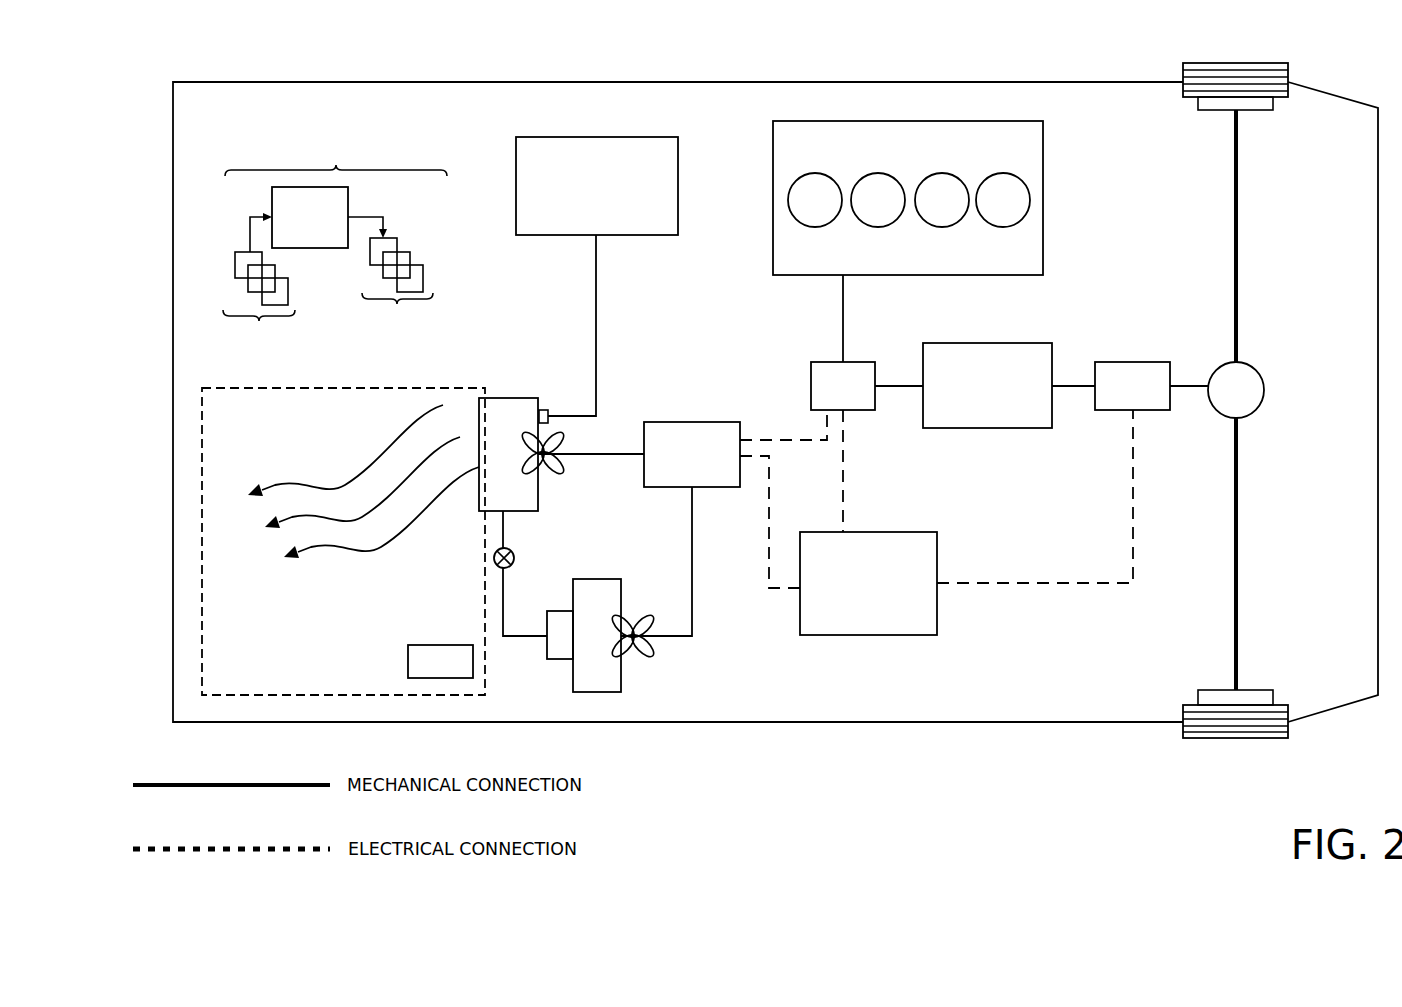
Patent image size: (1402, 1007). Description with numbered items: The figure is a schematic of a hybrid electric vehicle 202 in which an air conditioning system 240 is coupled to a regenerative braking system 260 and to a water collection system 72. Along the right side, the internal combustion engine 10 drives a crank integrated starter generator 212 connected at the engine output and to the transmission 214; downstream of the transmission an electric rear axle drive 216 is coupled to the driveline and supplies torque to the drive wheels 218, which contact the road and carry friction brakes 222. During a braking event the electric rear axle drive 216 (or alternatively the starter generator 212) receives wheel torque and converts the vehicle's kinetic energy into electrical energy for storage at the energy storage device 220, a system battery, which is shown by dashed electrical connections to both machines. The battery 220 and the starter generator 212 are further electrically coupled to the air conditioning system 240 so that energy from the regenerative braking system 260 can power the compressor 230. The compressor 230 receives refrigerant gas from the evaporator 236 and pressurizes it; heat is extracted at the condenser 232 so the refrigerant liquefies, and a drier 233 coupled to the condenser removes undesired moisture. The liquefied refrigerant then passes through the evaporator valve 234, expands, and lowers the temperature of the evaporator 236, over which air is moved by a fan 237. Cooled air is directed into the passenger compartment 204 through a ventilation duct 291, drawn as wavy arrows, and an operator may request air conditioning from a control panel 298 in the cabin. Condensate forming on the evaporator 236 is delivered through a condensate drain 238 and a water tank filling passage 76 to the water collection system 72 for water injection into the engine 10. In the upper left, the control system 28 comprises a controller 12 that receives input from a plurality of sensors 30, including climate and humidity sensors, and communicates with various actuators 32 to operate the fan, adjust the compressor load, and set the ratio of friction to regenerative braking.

The hybrid electric vehicle 202 is at (760, 82).
The control system 28 is at (336, 143).
The controller 12 is at (299, 228).
The sensors 30 is at (263, 289).
The actuators 32 is at (398, 282).
The water collection system 72 is at (585, 195).
The water tank filling passage 76 is at (597, 294).
The internal combustion engine 10 is at (898, 152).
The crank integrated starter generator 212 is at (828, 396).
The transmission 214 is at (973, 396).
The electric rear axle drive 216 is at (1118, 396).
The energy storage device 220 is at (853, 593).
The friction brakes 222 is at (1273, 107).
The drive wheels 218 is at (1291, 670).
The regenerative braking system 260 is at (986, 643).
The compressor 230 is at (677, 464).
The condenser 232 is at (583, 647).
The drier 233 is at (561, 660).
The evaporator valve 234 is at (514, 562).
The evaporator 236 is at (493, 463).
The fan 237 is at (558, 470).
The condensate drain 238 is at (543, 408).
The air conditioning system 240 is at (668, 685).
The passenger compartment 204 is at (325, 650).
The control panel 298 is at (440, 661).
The ventilation duct 291 is at (347, 446).